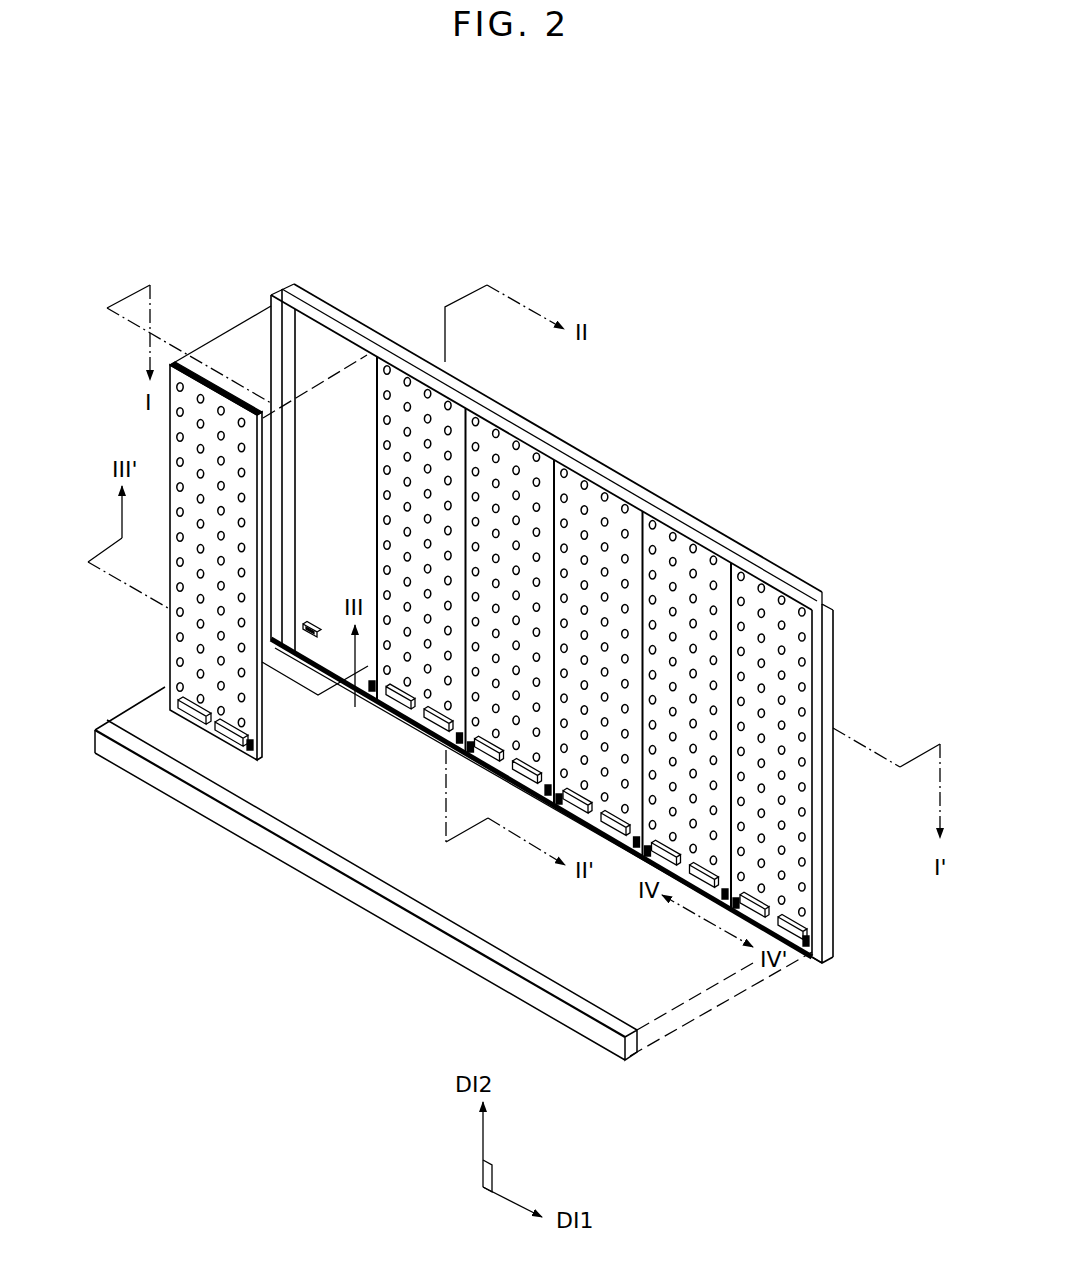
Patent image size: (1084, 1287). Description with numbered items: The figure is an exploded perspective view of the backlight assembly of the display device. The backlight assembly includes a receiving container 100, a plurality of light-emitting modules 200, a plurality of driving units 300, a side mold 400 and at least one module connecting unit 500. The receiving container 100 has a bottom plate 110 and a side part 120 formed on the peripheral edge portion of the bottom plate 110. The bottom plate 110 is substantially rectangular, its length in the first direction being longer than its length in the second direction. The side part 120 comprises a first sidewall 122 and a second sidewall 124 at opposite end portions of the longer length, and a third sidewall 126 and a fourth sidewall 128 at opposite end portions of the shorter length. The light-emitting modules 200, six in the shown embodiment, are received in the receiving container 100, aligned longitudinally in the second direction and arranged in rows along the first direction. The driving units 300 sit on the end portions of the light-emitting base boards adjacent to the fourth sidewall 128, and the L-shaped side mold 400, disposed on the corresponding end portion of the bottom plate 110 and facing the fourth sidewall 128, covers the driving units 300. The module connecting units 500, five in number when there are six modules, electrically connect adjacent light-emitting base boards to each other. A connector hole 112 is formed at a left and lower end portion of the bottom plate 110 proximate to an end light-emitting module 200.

The receiving container 100 is at (437, 224).
The bottom plate 110 is at (327, 347).
The connector hole 112 is at (306, 627).
The side part 120 is at (372, 327).
The first sidewall 122 is at (273, 357).
The second sidewall 124 is at (833, 665).
The third sidewall 126 is at (680, 529).
The fourth sidewall 128 is at (432, 724).
The light-emitting module 200 is at (148, 641).
The driving unit 300 is at (202, 731).
The side mold 400 is at (328, 874).
The module connecting unit 500 is at (630, 840).